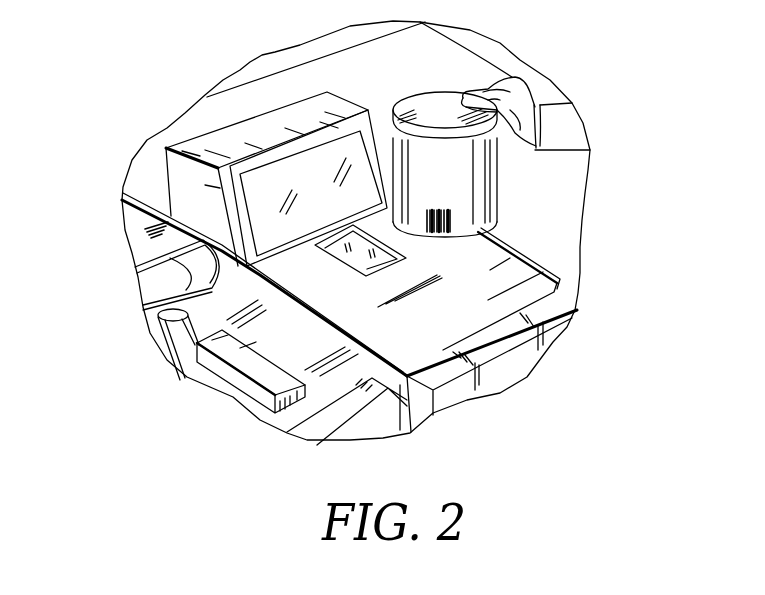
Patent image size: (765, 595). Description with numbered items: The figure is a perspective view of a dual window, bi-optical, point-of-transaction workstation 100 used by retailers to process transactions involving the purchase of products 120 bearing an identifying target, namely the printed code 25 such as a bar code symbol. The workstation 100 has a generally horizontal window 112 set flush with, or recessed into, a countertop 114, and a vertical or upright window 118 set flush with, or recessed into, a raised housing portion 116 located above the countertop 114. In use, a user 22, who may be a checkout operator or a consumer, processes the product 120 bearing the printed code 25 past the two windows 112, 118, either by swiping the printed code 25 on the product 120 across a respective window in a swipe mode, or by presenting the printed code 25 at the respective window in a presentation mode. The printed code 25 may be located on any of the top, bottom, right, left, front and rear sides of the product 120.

The point-of-transaction workstation 100 is at (568, 298).
The horizontal window 112 is at (361, 262).
The countertop 114 is at (468, 305).
The raised housing portion 116 is at (178, 170).
The vertical window 118 is at (298, 168).
The product 120 is at (443, 102).
The user 22 is at (578, 133).
The printed code 25 is at (450, 229).